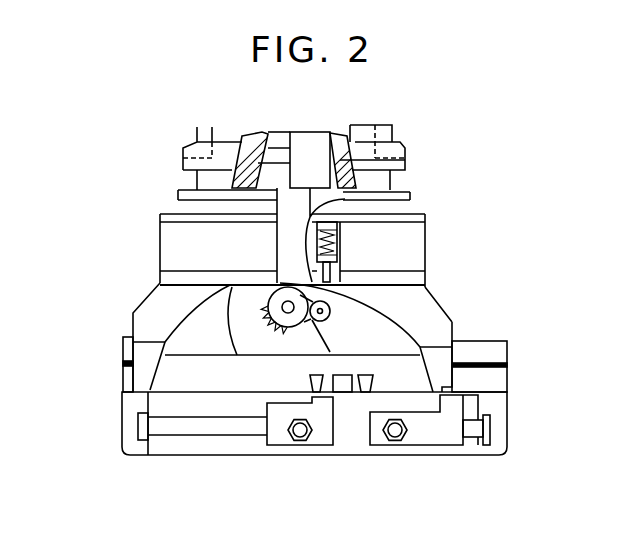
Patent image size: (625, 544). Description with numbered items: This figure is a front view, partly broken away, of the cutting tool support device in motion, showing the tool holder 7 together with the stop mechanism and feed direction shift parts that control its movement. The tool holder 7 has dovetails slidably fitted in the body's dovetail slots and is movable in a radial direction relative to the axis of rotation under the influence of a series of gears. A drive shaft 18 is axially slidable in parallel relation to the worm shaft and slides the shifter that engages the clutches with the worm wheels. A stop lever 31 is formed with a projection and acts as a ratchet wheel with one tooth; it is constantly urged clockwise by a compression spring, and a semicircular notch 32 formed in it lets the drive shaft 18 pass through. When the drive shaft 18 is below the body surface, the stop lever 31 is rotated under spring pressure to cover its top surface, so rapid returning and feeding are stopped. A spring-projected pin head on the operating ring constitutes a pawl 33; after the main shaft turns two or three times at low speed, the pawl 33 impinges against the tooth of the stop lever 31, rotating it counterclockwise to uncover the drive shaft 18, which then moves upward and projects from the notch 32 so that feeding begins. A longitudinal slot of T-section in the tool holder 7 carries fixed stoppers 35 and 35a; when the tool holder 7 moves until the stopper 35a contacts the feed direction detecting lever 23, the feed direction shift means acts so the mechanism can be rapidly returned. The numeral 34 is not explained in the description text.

The tool holder 7 is at (157, 393).
The drive shaft 18 is at (332, 316).
The feed direction detecting lever 23 is at (313, 380).
The stop lever 31 is at (262, 309).
The semicircular notch 32 is at (370, 322).
The pawl 33 is at (383, 258).
The support column 34 is at (278, 282).
The stopper 35 is at (313, 440).
The stopper 35a is at (433, 437).